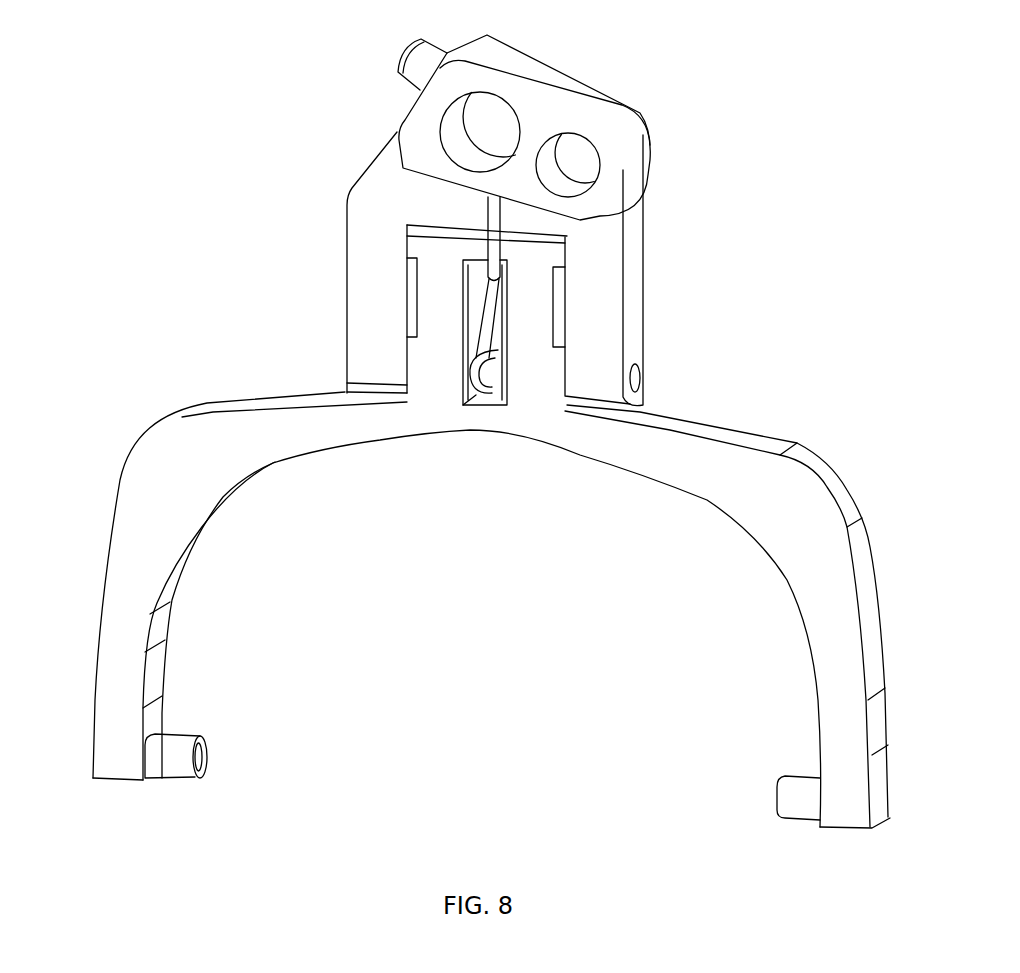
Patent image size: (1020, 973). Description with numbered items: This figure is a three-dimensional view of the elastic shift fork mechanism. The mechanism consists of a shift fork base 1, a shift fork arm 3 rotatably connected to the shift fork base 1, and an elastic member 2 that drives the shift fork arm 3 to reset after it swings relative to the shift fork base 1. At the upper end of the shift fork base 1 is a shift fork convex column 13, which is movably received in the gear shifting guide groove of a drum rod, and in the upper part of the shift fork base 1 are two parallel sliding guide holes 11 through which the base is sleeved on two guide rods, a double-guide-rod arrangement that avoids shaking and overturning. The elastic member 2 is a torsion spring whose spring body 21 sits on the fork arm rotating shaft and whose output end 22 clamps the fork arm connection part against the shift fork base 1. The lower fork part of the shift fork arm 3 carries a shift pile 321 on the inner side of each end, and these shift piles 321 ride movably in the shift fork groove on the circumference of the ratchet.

The shift fork base 1 is at (362, 168).
The sliding guide holes 11 is at (497, 114).
The shift fork convex column 13 is at (398, 60).
The elastic member 2 is at (462, 350).
The spring body 21 is at (502, 363).
The output end 22 is at (510, 288).
The shift fork arm 3 is at (115, 474).
The shift pile 321 is at (177, 760).